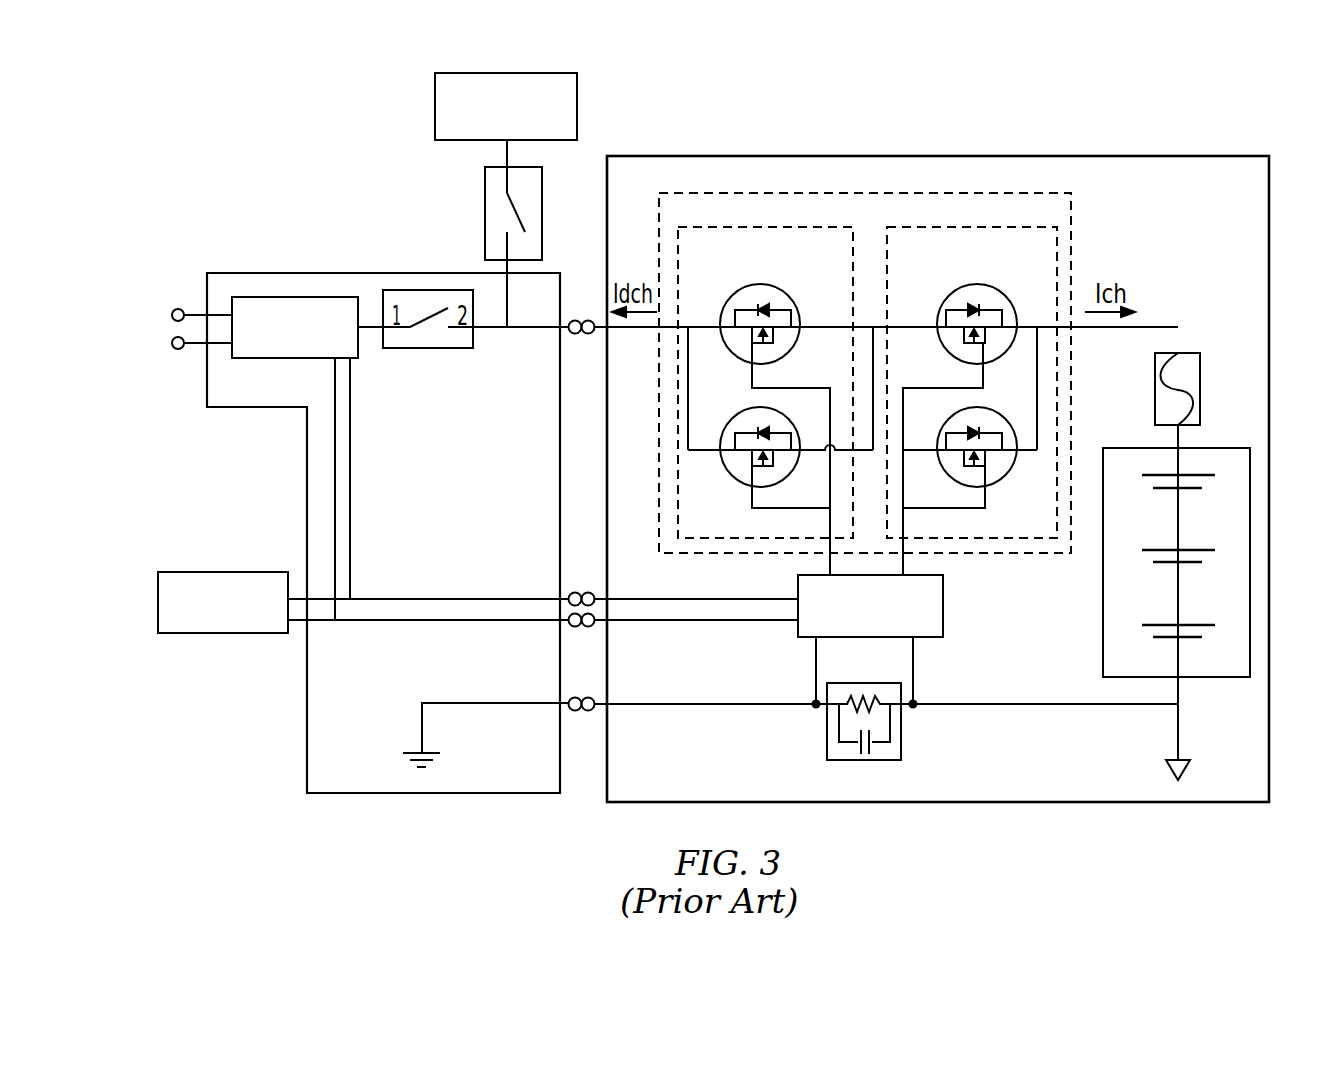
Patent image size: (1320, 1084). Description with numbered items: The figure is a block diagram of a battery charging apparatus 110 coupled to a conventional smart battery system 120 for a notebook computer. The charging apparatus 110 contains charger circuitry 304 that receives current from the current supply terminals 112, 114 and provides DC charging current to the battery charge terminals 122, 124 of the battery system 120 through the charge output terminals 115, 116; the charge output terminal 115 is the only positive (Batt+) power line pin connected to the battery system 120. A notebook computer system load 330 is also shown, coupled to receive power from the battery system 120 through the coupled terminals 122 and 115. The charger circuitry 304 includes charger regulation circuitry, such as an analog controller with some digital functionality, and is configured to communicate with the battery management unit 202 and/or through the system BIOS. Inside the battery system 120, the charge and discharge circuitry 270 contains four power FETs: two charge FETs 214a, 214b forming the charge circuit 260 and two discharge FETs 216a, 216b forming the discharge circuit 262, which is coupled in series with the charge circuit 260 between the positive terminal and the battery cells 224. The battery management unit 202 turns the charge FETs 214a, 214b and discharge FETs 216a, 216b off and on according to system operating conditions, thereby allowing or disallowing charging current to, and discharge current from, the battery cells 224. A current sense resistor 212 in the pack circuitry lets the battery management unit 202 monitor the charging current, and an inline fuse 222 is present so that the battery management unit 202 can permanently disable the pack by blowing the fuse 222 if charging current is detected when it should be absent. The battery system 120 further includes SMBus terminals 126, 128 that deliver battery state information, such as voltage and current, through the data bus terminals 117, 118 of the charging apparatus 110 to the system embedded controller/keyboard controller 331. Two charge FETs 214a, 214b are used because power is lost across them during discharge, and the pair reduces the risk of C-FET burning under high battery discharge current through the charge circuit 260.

The battery charging apparatus 110 is at (302, 273).
The current supply terminal 112 is at (174, 309).
The current supply terminal 114 is at (174, 349).
The charge output terminal 115 is at (578, 320).
The charge output terminal 116 is at (560, 711).
The data bus terminal 117 is at (577, 592).
The data bus terminal 118 is at (562, 625).
The smart battery system 120 is at (1130, 157).
The battery charge terminal 122 is at (590, 334).
The battery charge terminal 124 is at (601, 711).
The SMBus terminal 126 is at (595, 595).
The SMBus terminal 128 is at (601, 625).
The battery management unit 202 is at (800, 637).
The current sense resistor 212 is at (901, 742).
The charge FET 214a is at (775, 289).
The charge FET 214b is at (735, 482).
The discharge FET 216a is at (985, 289).
The discharge FET 216b is at (1000, 484).
The inline fuse 222 is at (1155, 395).
The battery cell 224 is at (1103, 640).
The charge circuit 260 is at (803, 227).
The discharge circuit 262 is at (983, 227).
The charge and discharge circuitry 270 is at (1071, 240).
The charger circuitry 304 is at (293, 358).
The notebook computer system load 330 is at (435, 110).
The embedded controller/keyboard controller 331 is at (238, 634).